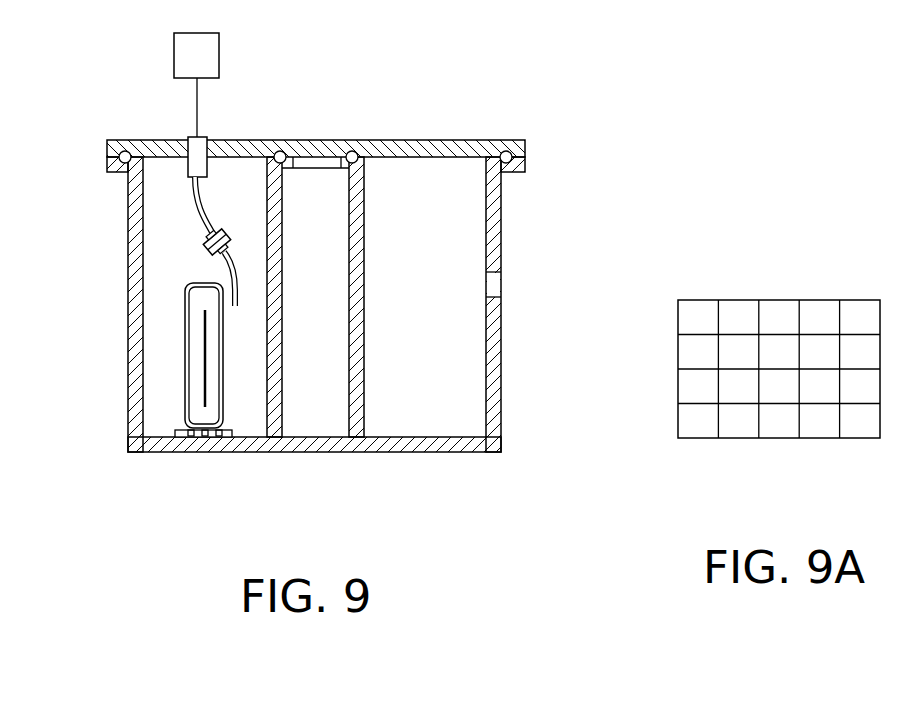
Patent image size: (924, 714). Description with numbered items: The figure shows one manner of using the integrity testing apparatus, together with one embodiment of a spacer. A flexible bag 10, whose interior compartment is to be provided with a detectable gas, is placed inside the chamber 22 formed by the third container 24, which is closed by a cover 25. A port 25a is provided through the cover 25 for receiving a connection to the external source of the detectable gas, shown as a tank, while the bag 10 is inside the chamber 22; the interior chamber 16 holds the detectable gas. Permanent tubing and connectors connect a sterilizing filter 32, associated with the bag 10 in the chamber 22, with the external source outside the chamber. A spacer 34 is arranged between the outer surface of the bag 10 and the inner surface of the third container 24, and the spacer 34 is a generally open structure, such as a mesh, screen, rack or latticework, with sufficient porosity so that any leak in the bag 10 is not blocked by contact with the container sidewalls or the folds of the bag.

In FIG. 9, the bag 10 is at (185, 322).
In FIG. 9, the second interior chamber 16 is at (200, 398).
In FIG. 9, the chamber 22 is at (444, 386).
In FIG. 9, the third container 24 is at (568, 214).
In FIG. 9, the cover 25 is at (107, 144).
In FIG. 9, the port 25a is at (209, 136).
In FIG. 9, the sterilizing filter 32 is at (203, 241).
In FIG. 9, the spacer 34 is at (210, 438).
In FIG. 9A, the spacer 34 is at (780, 300).